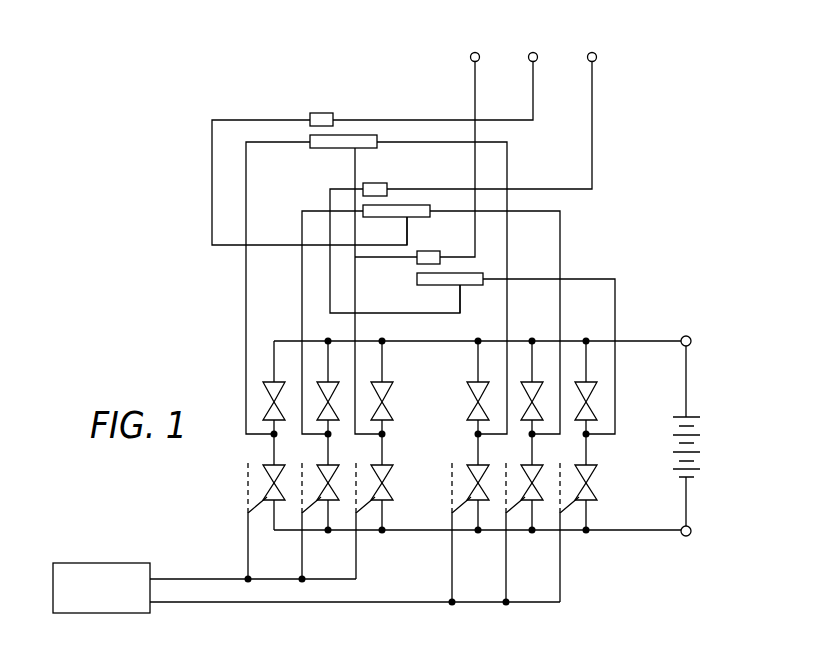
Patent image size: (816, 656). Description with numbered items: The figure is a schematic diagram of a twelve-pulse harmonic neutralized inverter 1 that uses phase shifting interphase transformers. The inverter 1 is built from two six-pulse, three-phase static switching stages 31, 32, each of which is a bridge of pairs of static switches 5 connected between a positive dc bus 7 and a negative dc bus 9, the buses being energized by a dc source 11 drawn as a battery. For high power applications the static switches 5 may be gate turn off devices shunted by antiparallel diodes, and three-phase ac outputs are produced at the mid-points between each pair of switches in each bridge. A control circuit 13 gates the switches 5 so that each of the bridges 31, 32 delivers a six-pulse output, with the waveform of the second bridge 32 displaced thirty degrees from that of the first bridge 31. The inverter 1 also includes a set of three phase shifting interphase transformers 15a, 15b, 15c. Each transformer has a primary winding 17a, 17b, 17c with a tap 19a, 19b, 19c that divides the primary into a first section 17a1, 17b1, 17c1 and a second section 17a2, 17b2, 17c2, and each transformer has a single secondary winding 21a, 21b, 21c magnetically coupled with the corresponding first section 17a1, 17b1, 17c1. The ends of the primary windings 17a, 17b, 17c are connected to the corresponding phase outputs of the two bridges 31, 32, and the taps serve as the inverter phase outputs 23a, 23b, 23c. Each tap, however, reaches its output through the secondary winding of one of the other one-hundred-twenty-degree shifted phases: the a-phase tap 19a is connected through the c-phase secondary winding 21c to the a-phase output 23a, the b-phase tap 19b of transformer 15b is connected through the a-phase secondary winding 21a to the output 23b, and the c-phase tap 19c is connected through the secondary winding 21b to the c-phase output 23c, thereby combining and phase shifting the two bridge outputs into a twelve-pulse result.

The twelve-pulse harmonic neutralized inverter 1 is at (641, 188).
The static switches 5 is at (467, 503).
The positive dc bus 7 is at (644, 341).
The negative dc bus 9 is at (633, 531).
The dc source 11 is at (696, 445).
The control circuit 13 is at (106, 563).
The phase shifting interphase transformer 15a is at (376, 235).
The phase shifting interphase transformer 15b is at (414, 291).
The phase shifting interphase transformer 15c is at (487, 327).
The primary winding 17a is at (367, 120).
The first section of primary winding 17a1 is at (313, 150).
The second section of primary winding 17a2 is at (377, 140).
The primary winding 17b is at (437, 204).
The first section of primary winding 17b1 is at (363, 218).
The second section of primary winding 17b2 is at (433, 209).
The primary winding 17c is at (514, 274).
The first section of primary winding 17c1 is at (417, 285).
The second section of primary winding 17c2 is at (483, 285).
The tap 19a is at (357, 162).
The tap 19b is at (407, 240).
The tap 19c is at (462, 292).
The secondary winding 21a is at (324, 113).
The secondary winding 21b is at (364, 183).
The secondary winding 21c is at (447, 243).
The phase output 23a is at (471, 55).
The phase output 23b is at (538, 53).
The phase output 23c is at (596, 54).
The six-pulse three-phase static switching stage 31 is at (288, 540).
The six-pulse three-phase static switching stage 32 is at (586, 536).